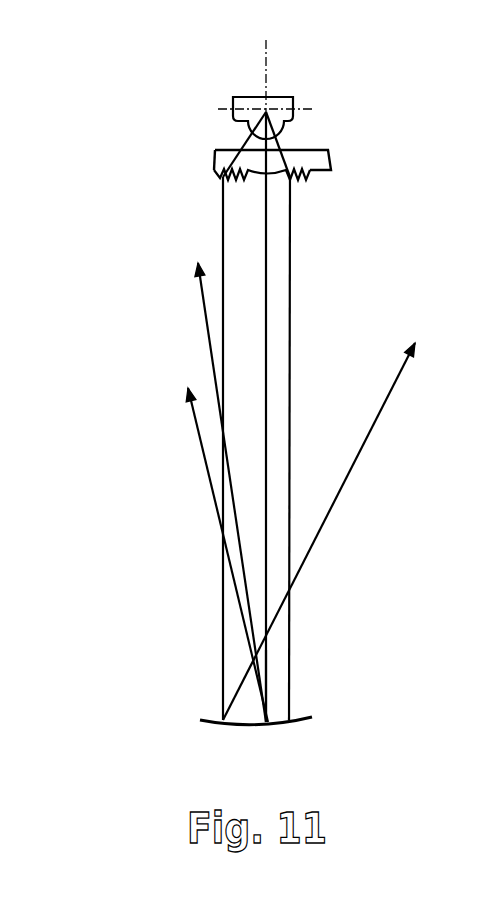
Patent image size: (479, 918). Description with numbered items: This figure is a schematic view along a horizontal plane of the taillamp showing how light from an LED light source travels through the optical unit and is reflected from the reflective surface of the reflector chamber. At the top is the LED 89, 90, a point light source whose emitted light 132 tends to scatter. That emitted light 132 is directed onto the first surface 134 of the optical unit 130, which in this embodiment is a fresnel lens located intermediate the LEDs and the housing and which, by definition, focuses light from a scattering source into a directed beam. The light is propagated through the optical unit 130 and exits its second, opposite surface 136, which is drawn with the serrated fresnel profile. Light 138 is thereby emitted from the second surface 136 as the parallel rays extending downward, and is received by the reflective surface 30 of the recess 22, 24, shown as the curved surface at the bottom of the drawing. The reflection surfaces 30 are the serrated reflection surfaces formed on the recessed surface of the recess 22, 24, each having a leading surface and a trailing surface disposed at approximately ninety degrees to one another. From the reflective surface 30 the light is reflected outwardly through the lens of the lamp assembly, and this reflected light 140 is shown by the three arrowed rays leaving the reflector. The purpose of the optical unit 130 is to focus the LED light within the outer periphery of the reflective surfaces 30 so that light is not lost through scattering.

The lamp 89 is at (319, 104).
The amber-colored LED 90 is at (297, 133).
The first surface 134 is at (225, 150).
The emitted light 132 is at (278, 142).
The optical unit 130 is at (291, 178).
The second surface 136 is at (237, 178).
The light 138 is at (291, 219).
The reflected light 140 is at (202, 295).
The first recess 22 is at (291, 744).
The second recess 24 is at (298, 723).
The reflection surface 30 is at (275, 718).